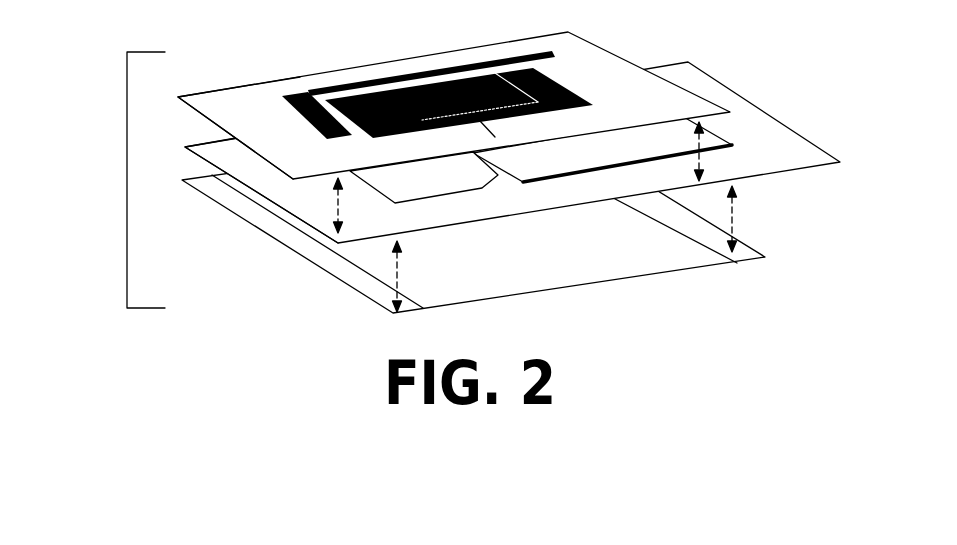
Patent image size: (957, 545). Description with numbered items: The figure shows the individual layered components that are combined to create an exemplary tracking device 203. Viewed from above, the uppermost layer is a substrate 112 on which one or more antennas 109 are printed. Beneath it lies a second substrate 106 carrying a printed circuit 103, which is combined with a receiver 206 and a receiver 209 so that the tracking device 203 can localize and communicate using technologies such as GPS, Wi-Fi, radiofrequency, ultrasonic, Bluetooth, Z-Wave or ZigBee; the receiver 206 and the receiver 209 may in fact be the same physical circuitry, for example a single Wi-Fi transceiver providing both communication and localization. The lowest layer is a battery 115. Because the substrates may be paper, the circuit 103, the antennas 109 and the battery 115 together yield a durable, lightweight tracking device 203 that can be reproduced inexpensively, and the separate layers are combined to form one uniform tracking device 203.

The tracking device 203 is at (127, 160).
The antennas 109 is at (607, 50).
The substrate 112 is at (188, 112).
The circuit 103 is at (703, 78).
The substrate 106 is at (244, 176).
The receiver 206 is at (734, 145).
The receiver 209 is at (468, 190).
The battery 115 is at (747, 252).